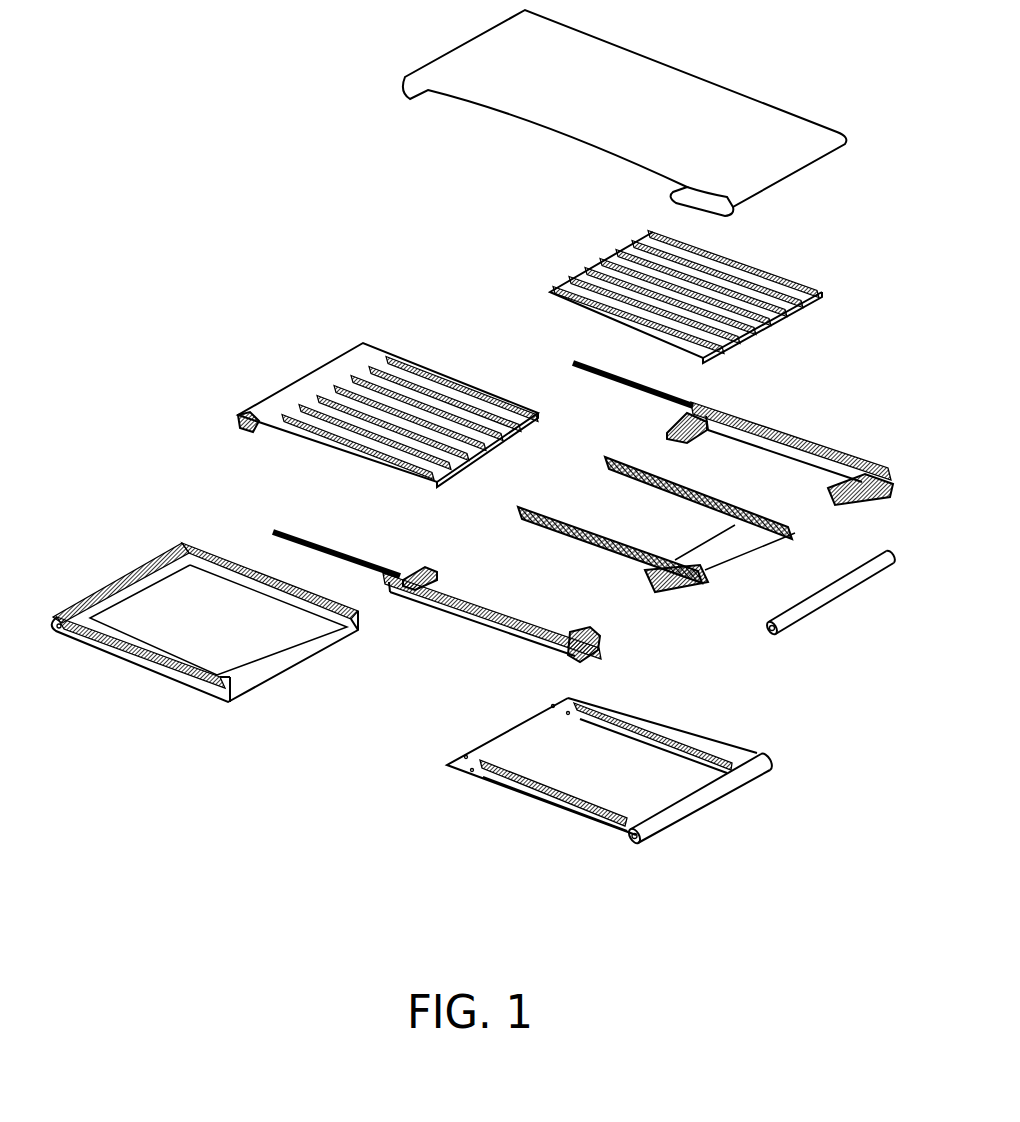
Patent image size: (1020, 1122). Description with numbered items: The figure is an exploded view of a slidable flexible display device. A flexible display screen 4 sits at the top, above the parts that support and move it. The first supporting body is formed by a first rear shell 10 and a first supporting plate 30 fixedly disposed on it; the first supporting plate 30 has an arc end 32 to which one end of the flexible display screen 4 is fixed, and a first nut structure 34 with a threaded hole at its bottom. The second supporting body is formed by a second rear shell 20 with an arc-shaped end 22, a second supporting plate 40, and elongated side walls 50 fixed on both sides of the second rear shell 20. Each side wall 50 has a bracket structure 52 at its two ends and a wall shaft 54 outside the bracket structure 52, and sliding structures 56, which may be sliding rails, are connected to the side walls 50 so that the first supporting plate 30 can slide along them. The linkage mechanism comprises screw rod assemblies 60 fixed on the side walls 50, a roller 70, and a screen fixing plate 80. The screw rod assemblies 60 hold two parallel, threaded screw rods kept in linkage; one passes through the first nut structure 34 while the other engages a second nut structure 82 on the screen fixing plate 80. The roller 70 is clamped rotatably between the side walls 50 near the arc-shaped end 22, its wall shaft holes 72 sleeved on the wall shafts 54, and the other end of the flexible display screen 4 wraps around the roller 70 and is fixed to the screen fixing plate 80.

The flexible display screen 4 is at (500, 55).
The first rear shell 10 is at (188, 590).
The second rear shell 20 is at (607, 772).
The arc-shaped end 22 is at (700, 800).
The first supporting plate 30 is at (339, 413).
The arc end 32 is at (238, 420).
The first nut structure 34 is at (437, 479).
The second supporting plate 40 is at (770, 320).
The side walls 50 is at (638, 532).
The bracket structure 52 is at (420, 566).
The wall shaft 54 is at (875, 498).
The sliding structure 56 is at (633, 390).
The screw rod assemblies 60 is at (656, 555).
The roller 70 is at (828, 638).
The wall shaft hole 72 is at (766, 636).
The screen fixing plate 80 is at (730, 542).
The second nut structure 82 is at (653, 587).